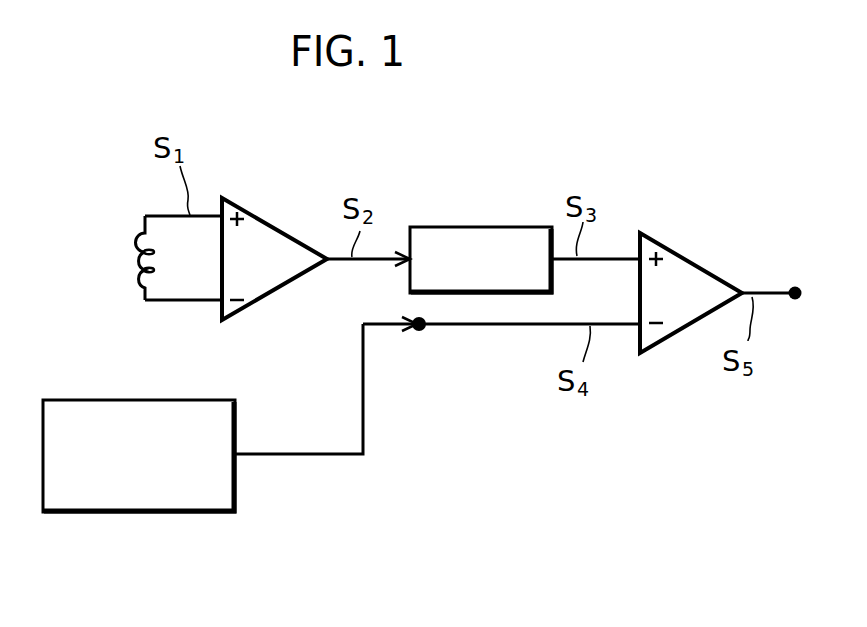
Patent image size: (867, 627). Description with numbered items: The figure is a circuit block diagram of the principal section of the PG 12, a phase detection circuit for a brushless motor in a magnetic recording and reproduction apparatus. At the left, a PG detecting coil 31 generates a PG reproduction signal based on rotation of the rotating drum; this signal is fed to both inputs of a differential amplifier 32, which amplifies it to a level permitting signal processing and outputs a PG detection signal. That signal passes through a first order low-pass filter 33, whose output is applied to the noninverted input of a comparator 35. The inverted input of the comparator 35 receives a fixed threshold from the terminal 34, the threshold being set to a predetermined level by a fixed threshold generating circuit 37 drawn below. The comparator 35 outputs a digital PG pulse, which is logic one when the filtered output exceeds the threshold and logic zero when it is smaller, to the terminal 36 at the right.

The PG 12 is at (661, 172).
The PG detecting coil 31 is at (132, 264).
The differential amplifier 32 is at (278, 228).
The first order low-pass filter 33 is at (485, 227).
The terminal 34 is at (419, 331).
The comparator 35 is at (697, 263).
The terminal 36 is at (795, 286).
The fixed threshold generating circuit 37 is at (155, 512).